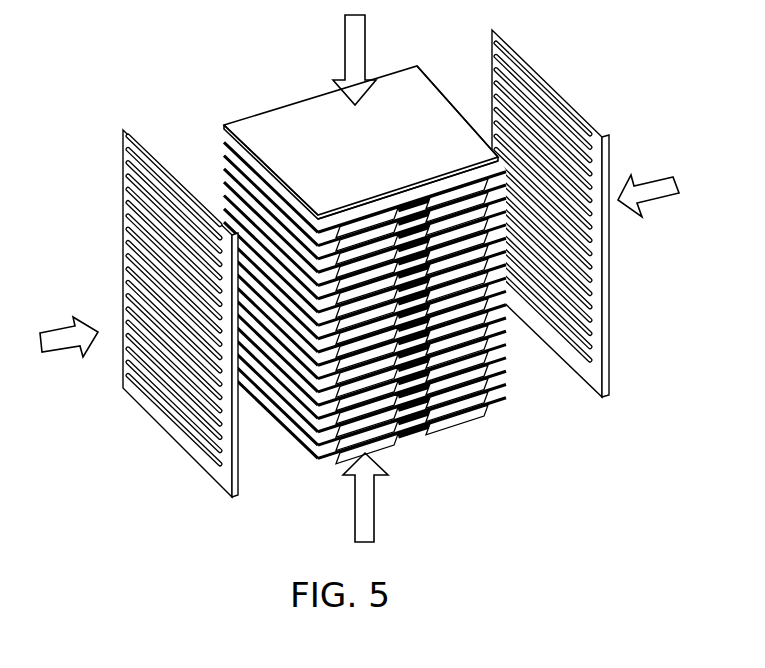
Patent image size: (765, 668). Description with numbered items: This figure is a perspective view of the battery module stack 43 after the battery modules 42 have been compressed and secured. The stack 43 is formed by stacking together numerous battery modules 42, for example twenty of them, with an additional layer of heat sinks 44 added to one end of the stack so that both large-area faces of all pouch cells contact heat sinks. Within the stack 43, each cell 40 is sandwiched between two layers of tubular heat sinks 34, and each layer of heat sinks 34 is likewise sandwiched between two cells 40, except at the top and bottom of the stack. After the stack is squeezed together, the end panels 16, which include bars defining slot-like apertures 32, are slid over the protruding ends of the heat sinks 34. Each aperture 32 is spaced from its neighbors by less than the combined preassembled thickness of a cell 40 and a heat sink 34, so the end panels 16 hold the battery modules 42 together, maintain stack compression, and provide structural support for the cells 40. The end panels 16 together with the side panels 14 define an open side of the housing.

The side panels 14 is at (339, 280).
The end panels 16 is at (609, 262).
The apertures 32 is at (140, 176).
The tubular heat sinks 34 is at (223, 125).
The cell 40 is at (460, 177).
The battery modules 42 is at (466, 108).
The battery module stack 43 is at (432, 446).
The additional layer of heat sinks 44 is at (300, 446).